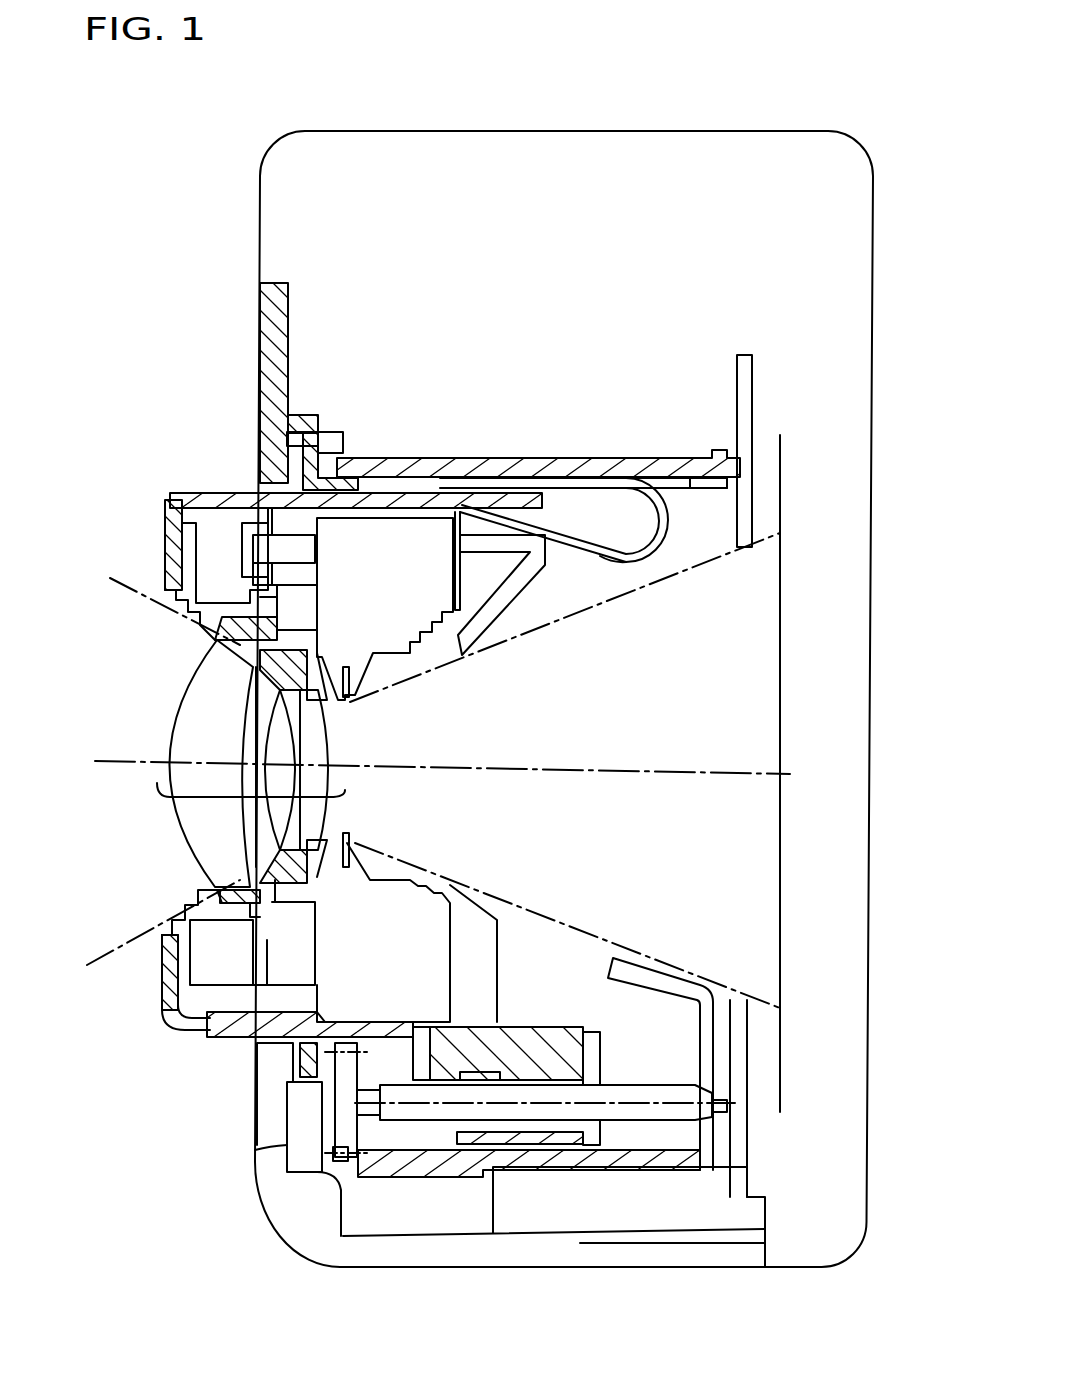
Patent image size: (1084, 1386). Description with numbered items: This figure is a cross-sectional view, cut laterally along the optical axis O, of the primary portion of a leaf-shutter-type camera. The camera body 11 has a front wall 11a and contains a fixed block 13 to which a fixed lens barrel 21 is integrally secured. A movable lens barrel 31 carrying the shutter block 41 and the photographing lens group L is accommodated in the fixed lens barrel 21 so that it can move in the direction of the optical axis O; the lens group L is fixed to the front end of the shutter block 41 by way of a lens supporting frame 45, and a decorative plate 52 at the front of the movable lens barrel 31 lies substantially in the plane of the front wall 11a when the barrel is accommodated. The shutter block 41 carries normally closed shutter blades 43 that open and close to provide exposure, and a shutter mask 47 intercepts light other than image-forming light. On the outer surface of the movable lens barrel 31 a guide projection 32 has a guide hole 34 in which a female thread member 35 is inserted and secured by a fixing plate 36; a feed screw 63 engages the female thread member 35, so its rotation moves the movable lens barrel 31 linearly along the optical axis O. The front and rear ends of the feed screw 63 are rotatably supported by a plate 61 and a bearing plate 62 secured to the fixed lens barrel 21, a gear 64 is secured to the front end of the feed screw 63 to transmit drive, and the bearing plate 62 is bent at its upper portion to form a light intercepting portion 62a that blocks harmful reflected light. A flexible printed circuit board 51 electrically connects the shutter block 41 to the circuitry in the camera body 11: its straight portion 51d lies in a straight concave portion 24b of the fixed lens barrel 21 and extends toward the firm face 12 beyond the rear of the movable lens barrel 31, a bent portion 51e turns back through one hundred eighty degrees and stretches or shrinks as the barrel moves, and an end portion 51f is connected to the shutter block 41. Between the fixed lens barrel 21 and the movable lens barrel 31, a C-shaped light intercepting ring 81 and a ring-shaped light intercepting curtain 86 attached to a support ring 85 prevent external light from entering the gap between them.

The camera body 11 is at (866, 192).
The front wall 11a is at (262, 332).
The firm face 12 is at (783, 802).
The fixed block 13 is at (752, 374).
The fixed lens barrel 21 is at (420, 458).
The straight concave portion 24b is at (708, 490).
The movable lens barrel 31 is at (225, 496).
The guide projection 32 is at (530, 1168).
The guide hole 34 is at (503, 1075).
The female thread member 35 is at (562, 1065).
The fixing plate 36 is at (601, 1046).
The shutter block 41 is at (378, 655).
The shutter blades 43 is at (350, 847).
The lens supporting frame 45 is at (215, 660).
The shutter mask 47 is at (516, 592).
The flexible printed circuit board 51 is at (670, 476).
The straight portion 51d is at (605, 476).
The bent portion 51e is at (622, 562).
The end portion 51f is at (462, 572).
The decorative plate 52 is at (168, 520).
The plate 61 is at (310, 1137).
The bearing plate 62 is at (750, 1155).
The light intercepting portion 62a is at (655, 970).
The feed screw 63 is at (400, 1112).
The gear 64 is at (343, 1155).
The light intercepting ring 81 is at (312, 447).
The support ring 85 is at (298, 414).
The light intercepting curtain 86 is at (300, 462).
The optical axis O is at (150, 757).
The lens group L is at (235, 805).